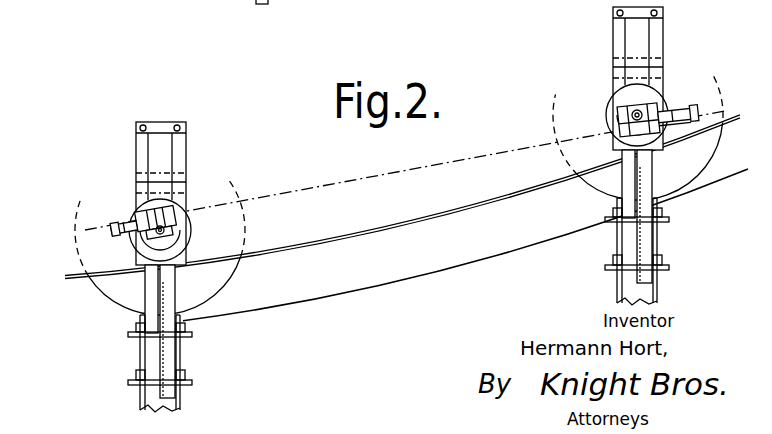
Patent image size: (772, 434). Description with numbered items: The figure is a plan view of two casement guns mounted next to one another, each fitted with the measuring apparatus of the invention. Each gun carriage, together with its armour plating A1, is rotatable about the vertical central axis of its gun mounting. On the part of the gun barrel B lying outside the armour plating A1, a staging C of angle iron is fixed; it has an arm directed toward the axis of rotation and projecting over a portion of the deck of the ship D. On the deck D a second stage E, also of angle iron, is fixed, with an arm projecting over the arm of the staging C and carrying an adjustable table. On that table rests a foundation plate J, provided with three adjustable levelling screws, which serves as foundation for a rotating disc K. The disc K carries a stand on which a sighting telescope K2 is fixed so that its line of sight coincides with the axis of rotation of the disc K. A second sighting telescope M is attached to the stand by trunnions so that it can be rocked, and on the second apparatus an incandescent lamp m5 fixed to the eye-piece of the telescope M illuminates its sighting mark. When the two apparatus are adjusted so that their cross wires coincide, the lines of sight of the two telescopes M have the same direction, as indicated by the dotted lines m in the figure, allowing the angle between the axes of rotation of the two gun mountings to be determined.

The second stage E is at (179, 138).
The foundation plate J is at (165, 205).
The second sighting telescope M is at (120, 212).
The lines of sight of the telescopes M m is at (409, 159).
The incandescent lamp m5 is at (693, 133).
The rotating disc K is at (177, 240).
The sighting telescope K2 is at (630, 112).
The armour plating A1 is at (213, 291).
The deck of the ship D is at (287, 252).
The staging C is at (170, 343).
The gun barrel B is at (178, 365).